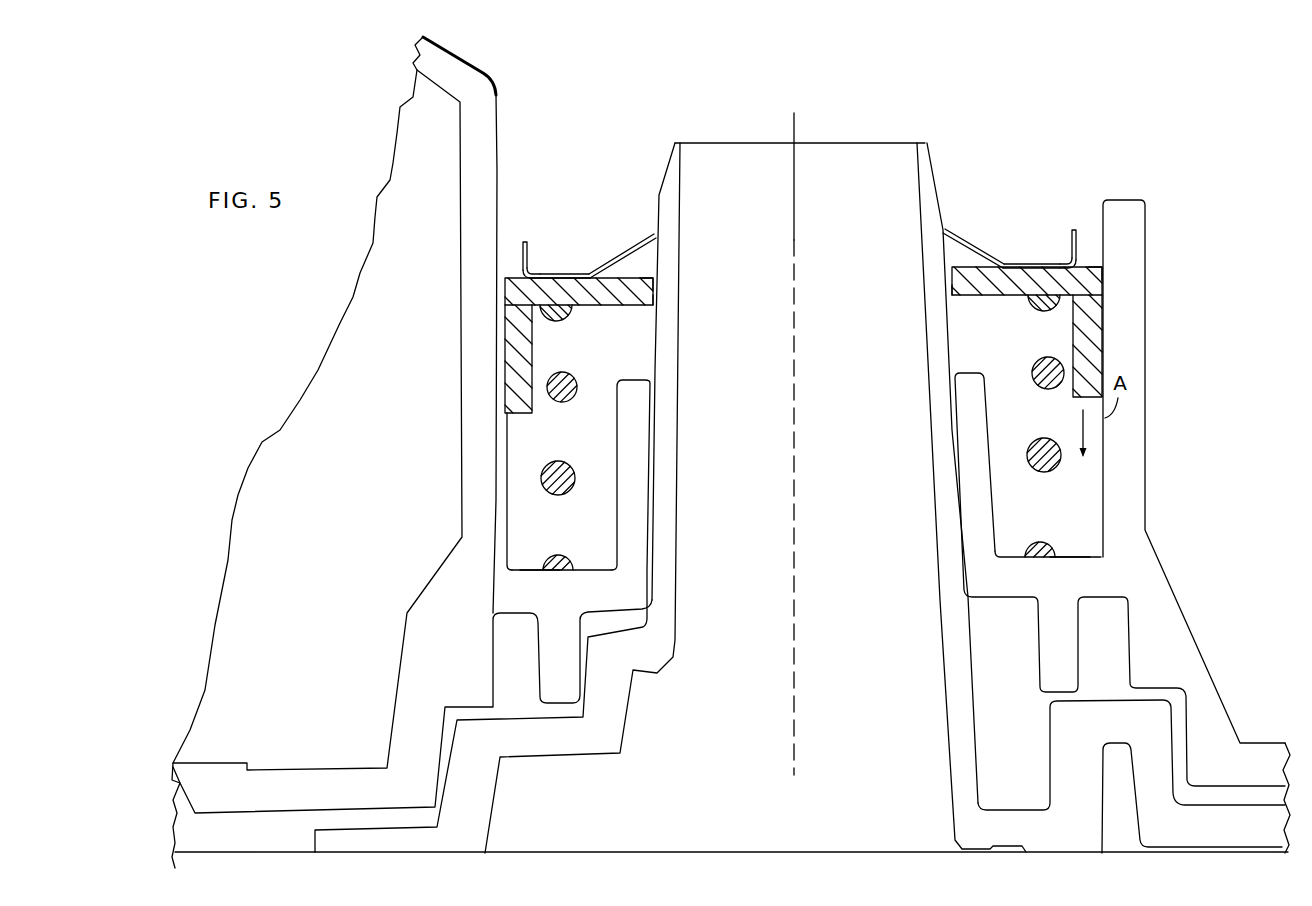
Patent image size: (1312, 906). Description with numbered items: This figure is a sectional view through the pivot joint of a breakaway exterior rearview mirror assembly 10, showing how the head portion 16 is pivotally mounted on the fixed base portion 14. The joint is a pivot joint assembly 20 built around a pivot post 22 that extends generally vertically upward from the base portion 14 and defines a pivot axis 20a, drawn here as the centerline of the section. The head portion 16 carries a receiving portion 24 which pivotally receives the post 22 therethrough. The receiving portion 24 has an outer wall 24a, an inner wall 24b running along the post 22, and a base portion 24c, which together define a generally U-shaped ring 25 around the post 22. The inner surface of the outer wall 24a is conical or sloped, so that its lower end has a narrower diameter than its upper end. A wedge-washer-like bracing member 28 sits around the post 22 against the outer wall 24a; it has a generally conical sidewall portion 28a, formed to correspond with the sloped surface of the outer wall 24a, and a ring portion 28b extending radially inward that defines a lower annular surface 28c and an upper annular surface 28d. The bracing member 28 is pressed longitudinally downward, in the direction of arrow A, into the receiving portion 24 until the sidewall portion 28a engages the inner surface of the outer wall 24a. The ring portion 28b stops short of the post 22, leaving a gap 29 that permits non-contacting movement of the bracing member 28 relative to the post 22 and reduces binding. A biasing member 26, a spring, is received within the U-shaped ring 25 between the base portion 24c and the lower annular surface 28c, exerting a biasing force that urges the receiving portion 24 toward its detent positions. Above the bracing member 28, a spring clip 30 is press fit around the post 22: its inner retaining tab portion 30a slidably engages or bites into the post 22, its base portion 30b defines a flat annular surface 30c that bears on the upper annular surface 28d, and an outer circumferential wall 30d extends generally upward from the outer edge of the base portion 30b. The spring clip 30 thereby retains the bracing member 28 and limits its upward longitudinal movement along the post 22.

The breakaway exterior rearview mirror assembly 10 is at (313, 118).
The base portion 14 is at (1153, 760).
The head portion 16 is at (500, 97).
The pivot joint assembly 20 is at (1022, 110).
The pivot axis 20a is at (798, 202).
The pivot post 22 is at (673, 140).
The receiving portion 24 is at (729, 526).
The outer wall 24a is at (483, 457).
The inner wall 24b is at (638, 460).
The base portion 24c is at (590, 577).
The U-shaped ring 25 is at (527, 542).
The biasing member 26 is at (563, 461).
The bracing member 28 is at (807, 314).
The sidewall portion 28a is at (505, 352).
The ring portion 28b is at (638, 291).
The lower annular surface 28c is at (598, 306).
The upper annular surface 28d is at (637, 270).
The gap 29 is at (653, 318).
The spring clip 30 is at (763, 213).
The inner retaining tab portion 30a is at (647, 233).
The base portion 30b is at (562, 276).
The flat annular surface 30c is at (520, 280).
The outer circumferential wall 30d is at (533, 240).